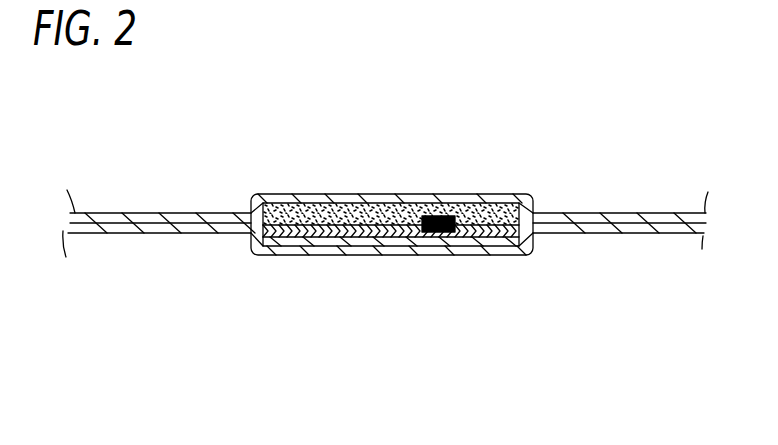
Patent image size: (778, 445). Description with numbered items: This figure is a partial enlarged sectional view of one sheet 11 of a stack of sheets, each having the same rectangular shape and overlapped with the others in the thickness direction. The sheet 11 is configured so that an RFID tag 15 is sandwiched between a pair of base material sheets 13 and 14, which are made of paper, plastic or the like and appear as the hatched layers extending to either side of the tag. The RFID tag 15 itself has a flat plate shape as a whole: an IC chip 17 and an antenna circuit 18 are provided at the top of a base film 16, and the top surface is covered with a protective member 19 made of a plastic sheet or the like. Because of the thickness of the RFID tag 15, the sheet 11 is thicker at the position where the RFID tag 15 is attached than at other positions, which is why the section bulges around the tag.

The sheet 11 is at (620, 202).
The base material sheet 13 is at (155, 231).
The base material sheet 14 is at (214, 212).
The RFID tag 15 is at (386, 194).
The base film 16 is at (377, 240).
The IC chip 17 is at (447, 216).
The antenna circuit 18 is at (340, 225).
The protective member 19 is at (307, 208).